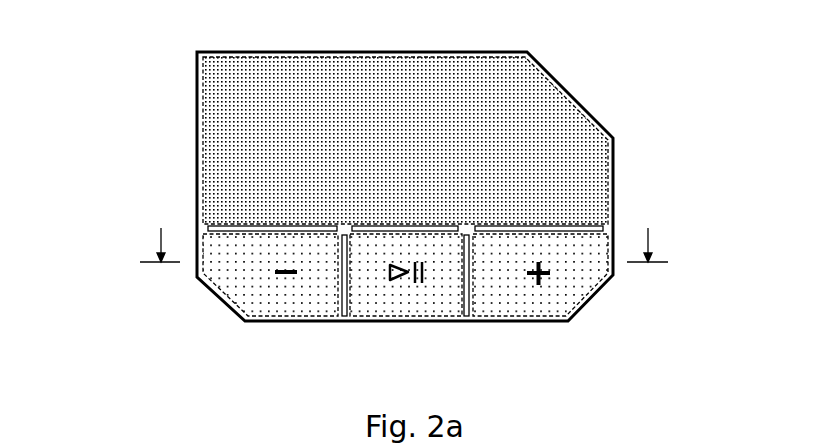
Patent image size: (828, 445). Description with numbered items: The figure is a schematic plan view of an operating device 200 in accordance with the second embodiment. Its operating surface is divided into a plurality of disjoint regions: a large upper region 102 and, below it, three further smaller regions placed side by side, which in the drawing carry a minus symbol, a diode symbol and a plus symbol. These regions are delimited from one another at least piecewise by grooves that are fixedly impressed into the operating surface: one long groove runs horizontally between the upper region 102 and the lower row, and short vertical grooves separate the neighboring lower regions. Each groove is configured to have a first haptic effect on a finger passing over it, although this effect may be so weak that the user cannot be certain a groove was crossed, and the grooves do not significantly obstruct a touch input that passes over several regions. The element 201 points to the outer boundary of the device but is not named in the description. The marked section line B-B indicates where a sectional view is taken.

The operating device 200 is at (105, 43).
The housing outline 201 is at (198, 88).
The region 102 is at (568, 125).